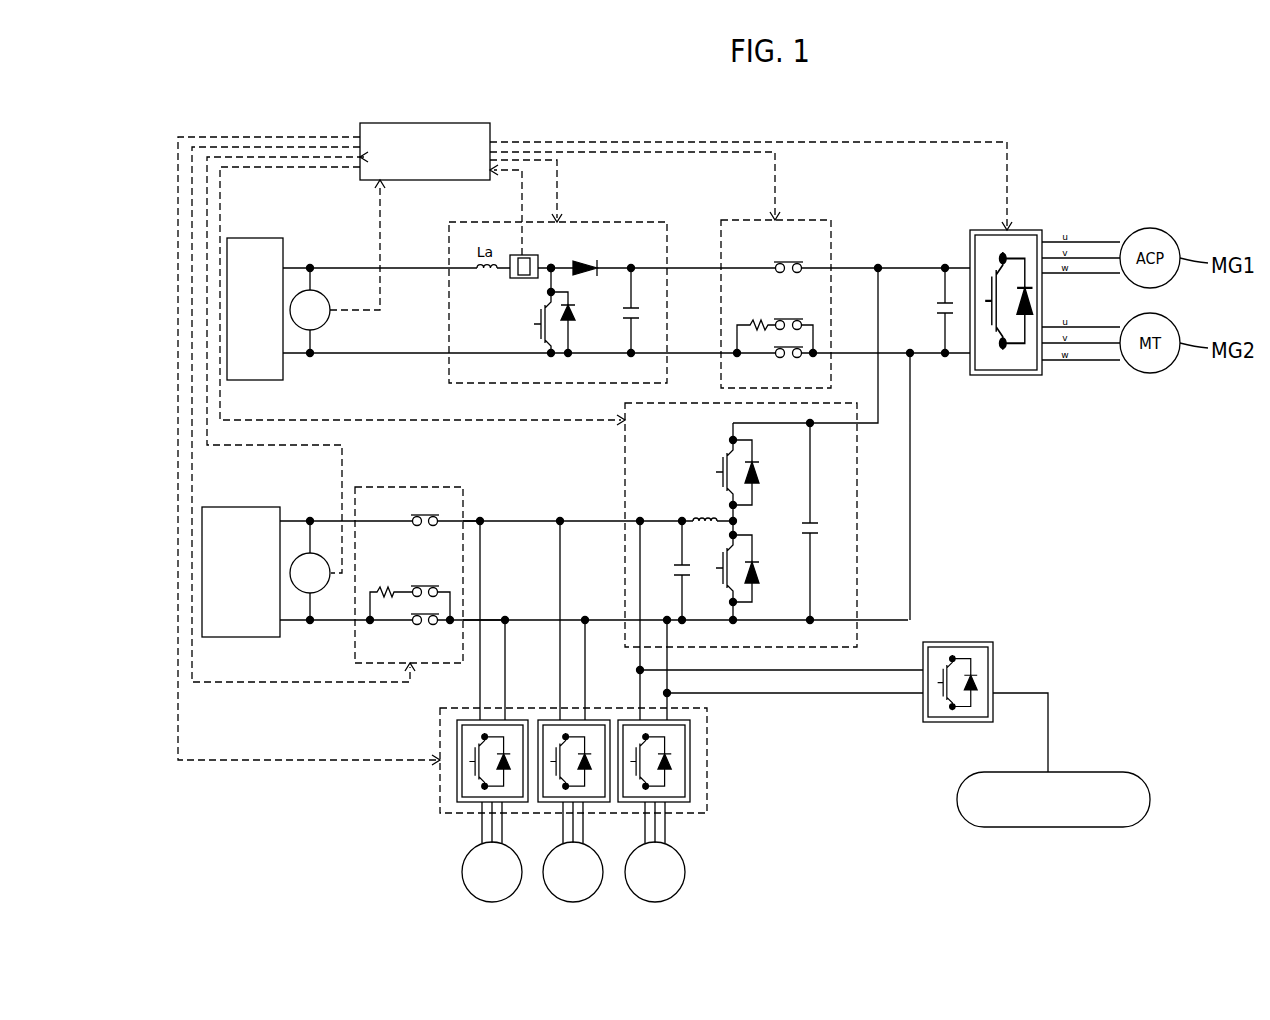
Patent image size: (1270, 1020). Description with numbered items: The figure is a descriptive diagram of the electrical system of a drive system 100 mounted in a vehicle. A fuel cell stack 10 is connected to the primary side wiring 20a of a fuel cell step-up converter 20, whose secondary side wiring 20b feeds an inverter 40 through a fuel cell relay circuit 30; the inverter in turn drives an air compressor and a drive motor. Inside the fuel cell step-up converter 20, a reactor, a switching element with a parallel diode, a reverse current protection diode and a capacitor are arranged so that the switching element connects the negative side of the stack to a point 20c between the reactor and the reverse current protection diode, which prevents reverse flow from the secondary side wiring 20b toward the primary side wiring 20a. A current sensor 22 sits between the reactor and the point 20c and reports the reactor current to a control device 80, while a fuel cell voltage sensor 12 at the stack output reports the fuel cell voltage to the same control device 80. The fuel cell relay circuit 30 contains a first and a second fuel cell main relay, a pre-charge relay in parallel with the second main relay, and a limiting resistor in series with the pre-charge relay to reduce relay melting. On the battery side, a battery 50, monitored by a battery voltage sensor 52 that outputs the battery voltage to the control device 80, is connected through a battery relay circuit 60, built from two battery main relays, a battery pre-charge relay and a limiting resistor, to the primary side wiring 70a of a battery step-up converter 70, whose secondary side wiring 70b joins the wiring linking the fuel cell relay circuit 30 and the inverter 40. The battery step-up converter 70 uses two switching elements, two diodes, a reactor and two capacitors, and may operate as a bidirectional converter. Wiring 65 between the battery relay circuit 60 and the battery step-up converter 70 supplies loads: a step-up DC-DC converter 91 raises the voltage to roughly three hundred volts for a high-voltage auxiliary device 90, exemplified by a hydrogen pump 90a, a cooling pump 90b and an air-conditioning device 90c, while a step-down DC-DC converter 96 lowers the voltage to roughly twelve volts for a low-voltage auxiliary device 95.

The fuel cell stack 10 is at (258, 238).
The fuel cell voltage sensor 12 is at (326, 299).
The fuel cell step-up converter 20 is at (558, 271).
The primary side wiring 20a is at (448, 270).
The secondary side wiring 20b is at (668, 270).
The point 20c is at (551, 264).
The current sensor 22 is at (515, 278).
The fuel cell relay circuit 30 is at (815, 220).
The inverter 40 is at (1030, 230).
The battery 50 is at (243, 507).
The battery voltage sensor 52 is at (329, 580).
The battery relay circuit 60 is at (451, 487).
The wiring 65 is at (537, 523).
The battery step-up converter 70 is at (624, 470).
The primary side wiring 70a is at (627, 533).
The secondary side wiring 70b is at (857, 442).
The control device 80 is at (408, 123).
The high-voltage auxiliary device 90 is at (541, 852).
The hydrogen pump 90a is at (513, 858).
The cooling pump 90b is at (594, 858).
The air-conditioning device 90c is at (676, 858).
The step-up DC-DC converter 91 is at (708, 760).
The low-voltage auxiliary device 95 is at (1020, 772).
The step-down DC-DC converter 96 is at (960, 642).
The drive system 100 is at (1066, 108).